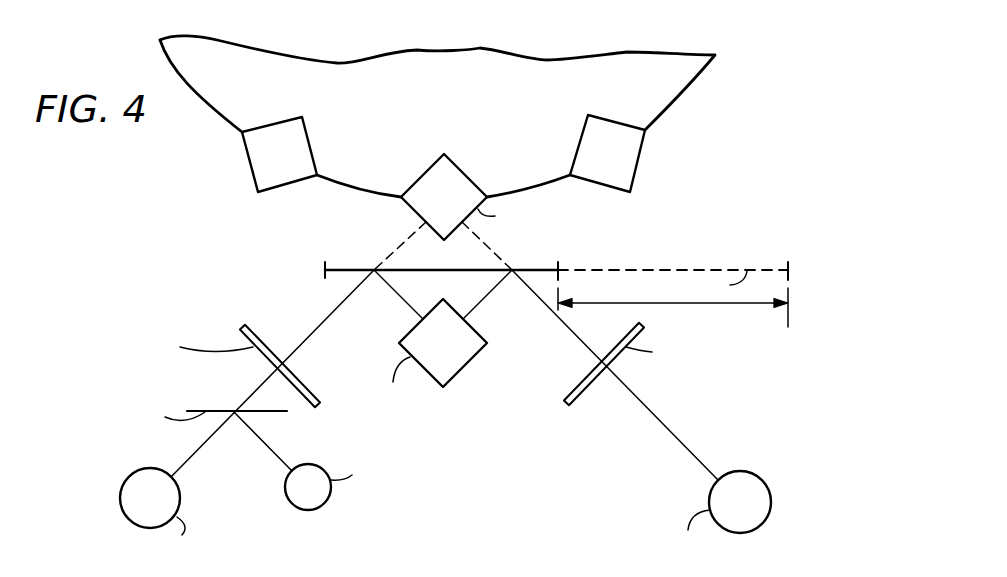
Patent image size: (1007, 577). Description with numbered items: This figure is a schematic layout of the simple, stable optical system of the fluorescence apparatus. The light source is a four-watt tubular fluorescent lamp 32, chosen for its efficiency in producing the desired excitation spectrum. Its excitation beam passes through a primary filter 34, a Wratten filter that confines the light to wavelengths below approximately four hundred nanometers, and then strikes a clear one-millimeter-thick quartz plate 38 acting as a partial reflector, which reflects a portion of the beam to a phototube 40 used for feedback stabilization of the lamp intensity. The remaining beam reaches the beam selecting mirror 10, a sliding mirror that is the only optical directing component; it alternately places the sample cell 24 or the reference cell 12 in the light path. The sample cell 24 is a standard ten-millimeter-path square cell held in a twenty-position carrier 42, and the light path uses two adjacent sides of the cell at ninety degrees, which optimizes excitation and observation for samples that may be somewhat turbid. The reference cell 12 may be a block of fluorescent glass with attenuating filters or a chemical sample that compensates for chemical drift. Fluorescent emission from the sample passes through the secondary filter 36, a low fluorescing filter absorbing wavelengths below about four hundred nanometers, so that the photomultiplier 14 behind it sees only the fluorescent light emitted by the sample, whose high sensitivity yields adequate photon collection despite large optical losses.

The beam selecting mirror 10 is at (353, 269).
The reference cell 12 is at (452, 353).
The photomultiplier 14 is at (749, 513).
The sample cell 24 is at (452, 207).
The lamp 32 is at (158, 510).
The primary filter 34 is at (304, 381).
The secondary filter 36 is at (587, 395).
The quartz plate 38 is at (272, 412).
The phototube 40 is at (317, 498).
The carrier 42 is at (680, 93).